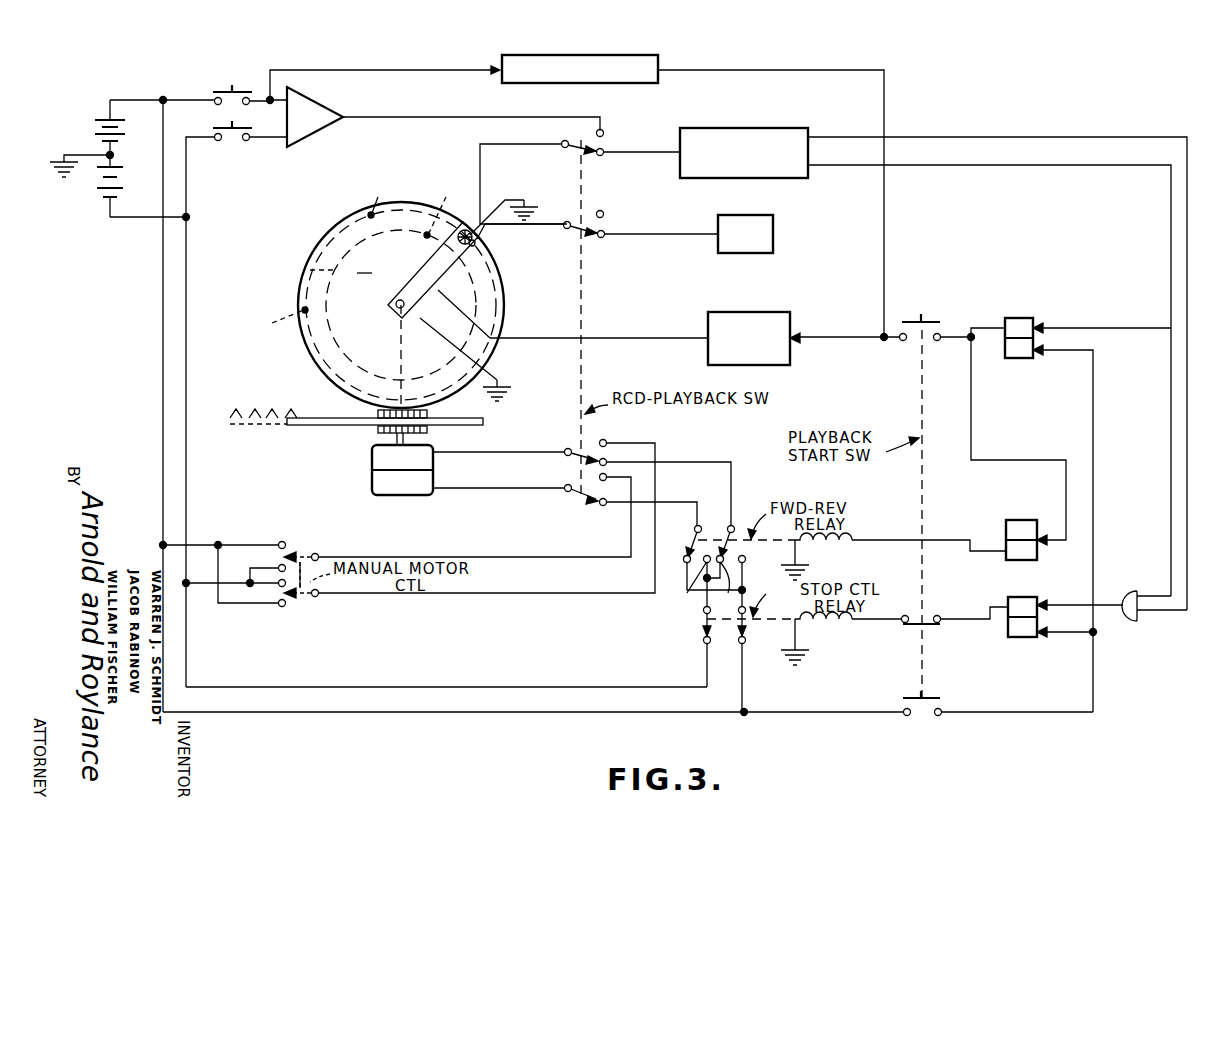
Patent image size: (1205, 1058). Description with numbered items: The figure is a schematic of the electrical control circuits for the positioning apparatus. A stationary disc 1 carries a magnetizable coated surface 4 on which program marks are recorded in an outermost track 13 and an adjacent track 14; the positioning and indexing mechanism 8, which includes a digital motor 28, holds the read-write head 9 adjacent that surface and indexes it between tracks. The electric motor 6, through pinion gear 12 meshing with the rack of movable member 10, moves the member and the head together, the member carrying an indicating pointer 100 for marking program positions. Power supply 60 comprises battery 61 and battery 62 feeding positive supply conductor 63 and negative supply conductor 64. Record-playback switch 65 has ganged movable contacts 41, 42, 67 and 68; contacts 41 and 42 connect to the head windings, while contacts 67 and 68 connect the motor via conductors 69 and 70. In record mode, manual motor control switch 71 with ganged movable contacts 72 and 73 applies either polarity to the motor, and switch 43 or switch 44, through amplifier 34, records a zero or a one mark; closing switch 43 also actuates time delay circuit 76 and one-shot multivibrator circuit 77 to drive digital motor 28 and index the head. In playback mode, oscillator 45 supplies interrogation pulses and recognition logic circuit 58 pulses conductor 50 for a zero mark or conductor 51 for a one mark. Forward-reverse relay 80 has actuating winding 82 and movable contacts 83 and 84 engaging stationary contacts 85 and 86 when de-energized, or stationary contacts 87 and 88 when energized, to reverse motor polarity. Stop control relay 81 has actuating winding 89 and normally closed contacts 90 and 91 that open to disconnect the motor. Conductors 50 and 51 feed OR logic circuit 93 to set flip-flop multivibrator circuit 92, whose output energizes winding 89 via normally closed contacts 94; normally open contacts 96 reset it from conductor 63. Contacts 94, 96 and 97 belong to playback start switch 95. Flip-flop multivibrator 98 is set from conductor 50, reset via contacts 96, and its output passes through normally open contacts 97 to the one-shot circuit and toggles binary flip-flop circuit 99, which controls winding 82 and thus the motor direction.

The stationary disc 1 is at (377, 293).
The surface 4 is at (364, 264).
The electric motor 6 is at (372, 483).
The positioning and indexing mechanism 8 is at (477, 300).
The read-write head 9 is at (478, 240).
The movable member 10 is at (320, 427).
The pinion gear 12 is at (427, 415).
The outermost track 13 is at (343, 228).
The adjacent track 14 is at (310, 272).
The digital motor 28 is at (422, 318).
The amplifier 34 is at (320, 108).
The movable contacts 41 is at (575, 238).
The movable contacts 42 is at (572, 141).
The switch 43 is at (236, 90).
The switch 44 is at (240, 136).
The oscillator 45 is at (747, 254).
The conductor 50 is at (853, 172).
The conductor 51 is at (882, 138).
The recognition logic circuit 58 is at (700, 178).
The power supply 60 is at (134, 175).
The battery 61 is at (100, 133).
The battery 62 is at (125, 184).
The positive supply conductor 63 is at (163, 318).
The negative supply conductor 64 is at (186, 307).
The record-playback switch 65 is at (580, 425).
The movable contacts 67 is at (570, 456).
The movable contacts 68 is at (590, 495).
The conductor 69 is at (467, 454).
The conductor 70 is at (495, 490).
The manual motor control switch 71 is at (313, 551).
The movable contact 72 is at (297, 553).
The movable contact 73 is at (318, 598).
The time delay circuit 76 is at (642, 60).
The one-shot multivibrator circuit 77 is at (758, 312).
The forward-reverse relay 80 is at (776, 543).
The stop control relay 81 is at (781, 621).
The actuating winding 82 is at (828, 547).
The movable contact 83 is at (695, 535).
The movable contact 84 is at (731, 528).
The stationary contact 85 is at (702, 572).
The stationary contact 86 is at (722, 583).
The stationary contact 87 is at (691, 591).
The stationary contact 88 is at (743, 561).
The actuating winding 89 is at (832, 626).
The normally closed contacts 90 is at (705, 618).
The normally closed contacts 91 is at (740, 628).
The flip-flop multivibrator circuit 92 is at (1025, 637).
The OR logic circuit 93 is at (1131, 622).
The normally closed contacts 94 is at (932, 627).
The playback start switch 95 is at (925, 484).
The normally open contacts 96 is at (930, 698).
The normally open contacts 97 is at (930, 322).
The flip-flop multivibrator 98 is at (1020, 318).
The binary flip-flop circuit 99 is at (1019, 520).
The indicating pointer 100 is at (297, 418).